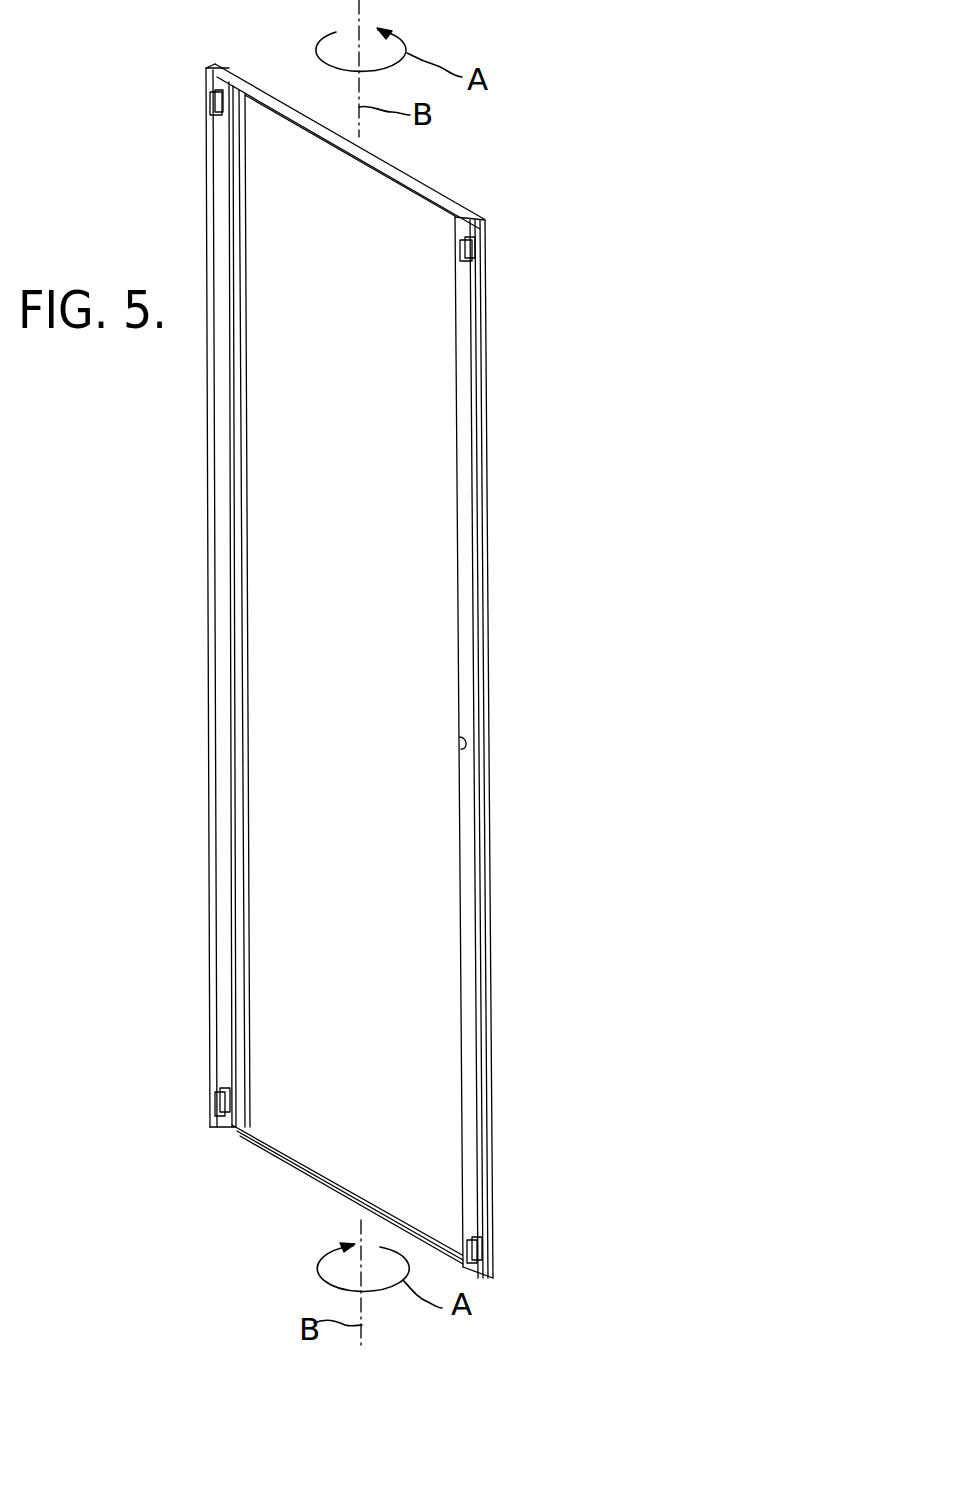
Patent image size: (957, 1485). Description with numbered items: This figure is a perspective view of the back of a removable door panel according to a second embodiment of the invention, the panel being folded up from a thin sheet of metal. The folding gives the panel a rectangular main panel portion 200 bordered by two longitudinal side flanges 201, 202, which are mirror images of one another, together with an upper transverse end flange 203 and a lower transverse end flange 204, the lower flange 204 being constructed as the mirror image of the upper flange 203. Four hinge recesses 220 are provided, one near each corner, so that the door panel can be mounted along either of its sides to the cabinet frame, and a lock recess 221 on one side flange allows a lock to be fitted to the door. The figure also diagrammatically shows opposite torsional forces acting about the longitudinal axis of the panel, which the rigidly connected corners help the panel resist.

The main panel portion 200 is at (420, 413).
The longitudinal side flange 201 is at (208, 393).
The longitudinal side flange 202 is at (465, 384).
The upper transverse end flange 203 is at (430, 187).
The lower transverse end flange 204 is at (311, 1178).
The hinge recess 220 is at (212, 105).
The lock recess 221 is at (460, 745).